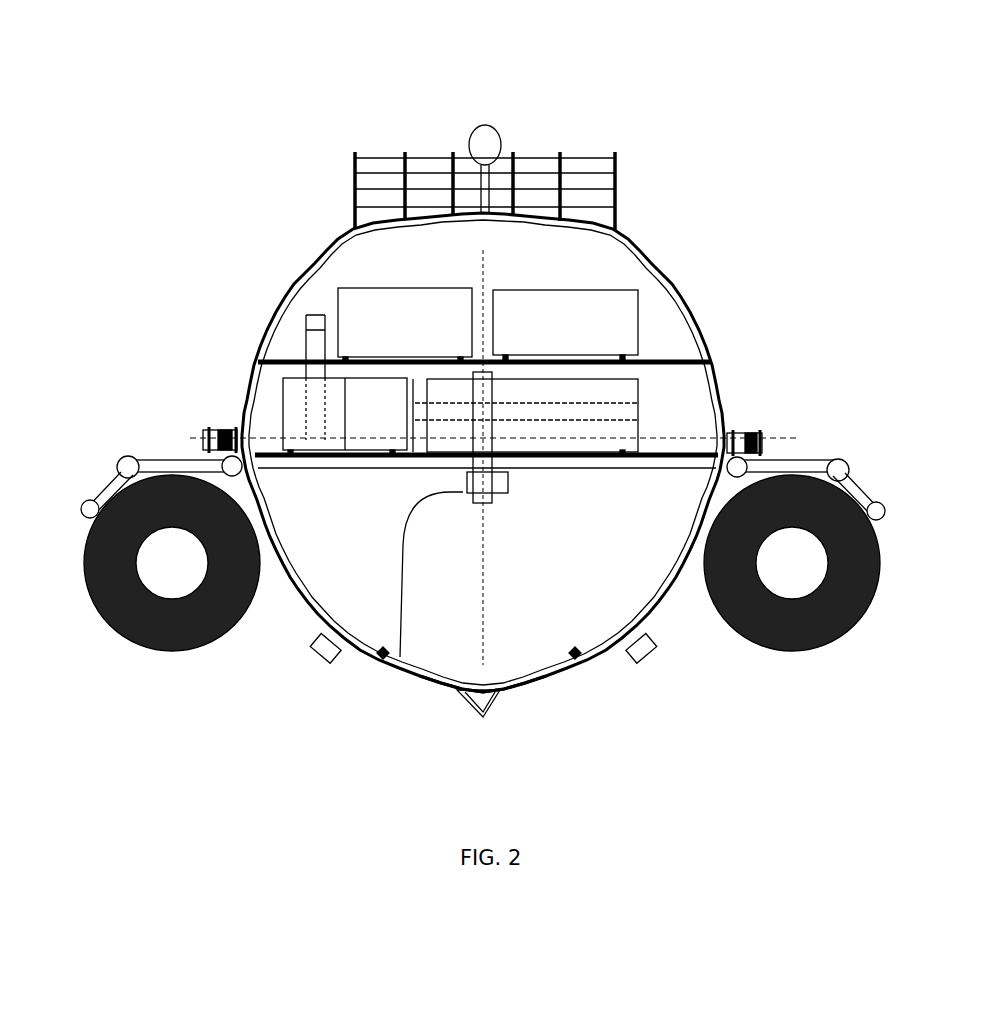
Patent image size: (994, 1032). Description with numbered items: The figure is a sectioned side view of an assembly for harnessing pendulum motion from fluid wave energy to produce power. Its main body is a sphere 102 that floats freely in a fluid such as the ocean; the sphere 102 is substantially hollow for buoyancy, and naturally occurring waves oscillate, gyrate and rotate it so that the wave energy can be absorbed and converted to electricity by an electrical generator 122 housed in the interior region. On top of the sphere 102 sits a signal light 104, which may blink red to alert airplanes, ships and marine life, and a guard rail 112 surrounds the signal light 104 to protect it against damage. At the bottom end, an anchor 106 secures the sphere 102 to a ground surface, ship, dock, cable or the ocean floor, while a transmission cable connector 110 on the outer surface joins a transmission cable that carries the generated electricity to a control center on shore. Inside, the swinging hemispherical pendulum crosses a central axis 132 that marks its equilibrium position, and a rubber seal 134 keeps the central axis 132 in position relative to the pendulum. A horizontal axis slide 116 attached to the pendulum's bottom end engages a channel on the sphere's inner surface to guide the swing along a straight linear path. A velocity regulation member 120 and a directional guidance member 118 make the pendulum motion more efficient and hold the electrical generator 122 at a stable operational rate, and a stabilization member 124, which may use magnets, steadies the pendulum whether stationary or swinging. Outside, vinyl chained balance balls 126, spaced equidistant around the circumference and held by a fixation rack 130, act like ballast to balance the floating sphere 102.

The sphere 102 is at (683, 293).
The signal light 104 is at (500, 142).
The anchor 106 is at (492, 705).
The transmission cable connector 110 is at (652, 648).
The guard rail 112 is at (618, 173).
The horizontal axis slide 116 is at (587, 670).
The directional guidance member 118 is at (623, 393).
The velocity regulation member 120 is at (292, 395).
The electrical generator 122 is at (355, 308).
The stabilization member 124 is at (605, 308).
The vinyl chained balance balls 126 is at (83, 547).
The fixation rack 130 is at (135, 462).
The central axis 132 is at (225, 428).
The rubber seal 134 is at (205, 432).